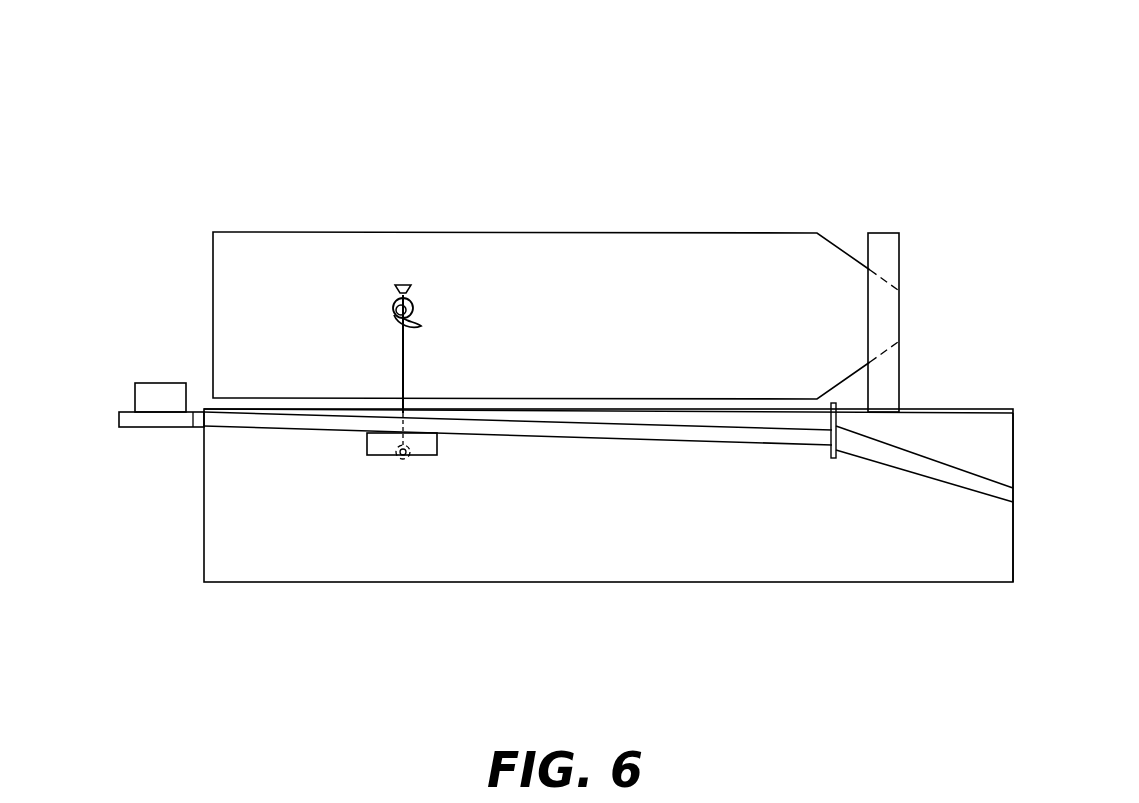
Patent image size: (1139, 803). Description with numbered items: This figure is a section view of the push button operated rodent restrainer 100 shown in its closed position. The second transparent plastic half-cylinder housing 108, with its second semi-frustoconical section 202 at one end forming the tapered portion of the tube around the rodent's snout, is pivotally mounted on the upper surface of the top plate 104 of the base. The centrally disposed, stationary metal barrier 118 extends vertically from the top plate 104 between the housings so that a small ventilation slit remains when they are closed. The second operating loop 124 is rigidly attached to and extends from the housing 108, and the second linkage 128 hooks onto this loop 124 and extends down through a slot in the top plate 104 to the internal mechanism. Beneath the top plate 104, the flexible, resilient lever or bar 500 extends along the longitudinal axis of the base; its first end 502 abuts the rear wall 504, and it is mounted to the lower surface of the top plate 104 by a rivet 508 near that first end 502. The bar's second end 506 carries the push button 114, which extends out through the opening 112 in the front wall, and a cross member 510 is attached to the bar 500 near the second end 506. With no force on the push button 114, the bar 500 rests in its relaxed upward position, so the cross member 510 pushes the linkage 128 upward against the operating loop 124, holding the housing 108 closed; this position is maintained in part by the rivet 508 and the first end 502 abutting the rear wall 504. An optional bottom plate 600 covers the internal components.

The push button operated rodent restrainer 100 is at (778, 100).
The top plate 104 is at (983, 413).
The second transparent plastic half-cylinder housing 108 is at (608, 336).
The opening 112 is at (158, 494).
The push button 114 is at (157, 402).
The stationary metal barrier 118 is at (898, 248).
The second operating loop 124 is at (413, 298).
The second linkage 128 is at (402, 365).
The second semi-frustoconical section 202 is at (838, 262).
The flexible, resilient lever or bar 500 is at (632, 442).
The first end 502 is at (997, 502).
The rear wall 504 is at (1013, 458).
The second end 506 is at (118, 413).
The rivet 508 is at (836, 421).
The cross member 510 is at (375, 455).
The bottom plate 600 is at (838, 584).